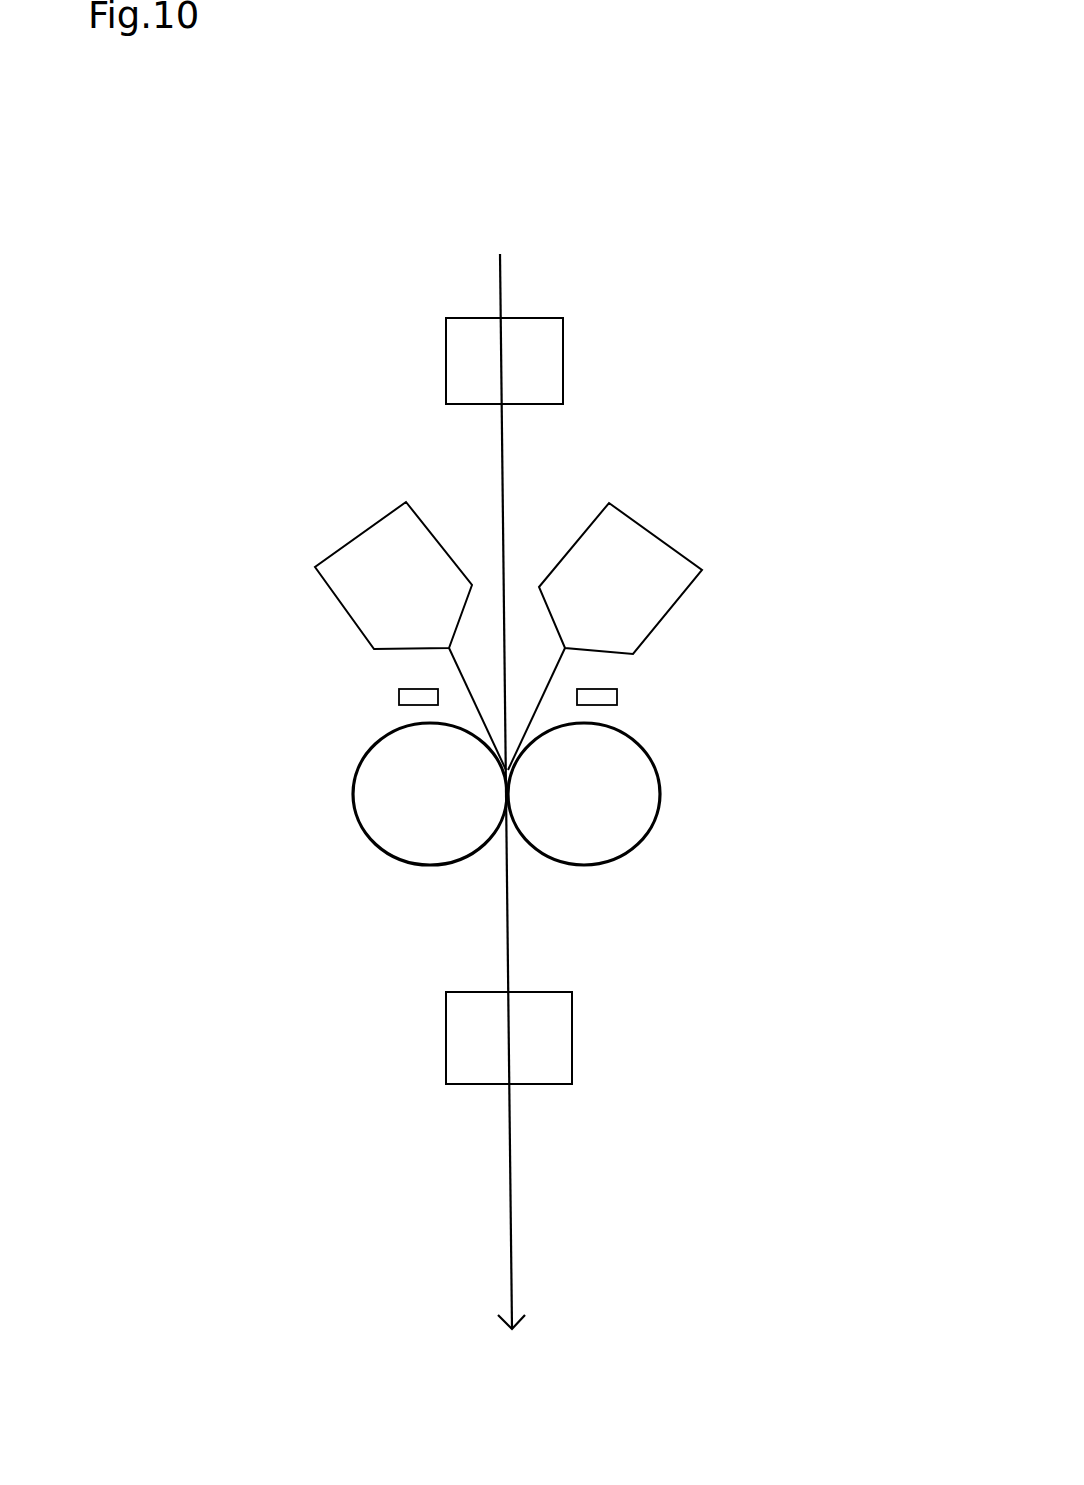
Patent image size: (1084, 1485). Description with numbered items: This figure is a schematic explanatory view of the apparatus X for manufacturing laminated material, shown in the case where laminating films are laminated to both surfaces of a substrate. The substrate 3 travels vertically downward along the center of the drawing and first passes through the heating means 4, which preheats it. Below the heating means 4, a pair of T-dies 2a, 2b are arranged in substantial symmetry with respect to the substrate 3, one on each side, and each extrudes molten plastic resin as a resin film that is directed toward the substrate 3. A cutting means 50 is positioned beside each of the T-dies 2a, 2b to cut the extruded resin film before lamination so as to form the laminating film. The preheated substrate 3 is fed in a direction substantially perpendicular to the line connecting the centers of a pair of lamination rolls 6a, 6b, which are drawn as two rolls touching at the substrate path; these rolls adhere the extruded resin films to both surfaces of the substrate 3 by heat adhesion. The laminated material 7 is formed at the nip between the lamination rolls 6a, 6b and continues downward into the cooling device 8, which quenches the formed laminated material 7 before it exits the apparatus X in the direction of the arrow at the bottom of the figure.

The substrate 3 is at (503, 262).
The apparatus for manufacturing laminated material X is at (384, 430).
The heating means 4 is at (538, 355).
The T-die 2a is at (315, 576).
The T-die 2b is at (693, 582).
The cutting means 50 is at (399, 697).
The lamination roll 6a is at (355, 813).
The lamination roll 6b is at (660, 815).
The laminated material 7 is at (510, 860).
The cooling device 8 is at (553, 1042).